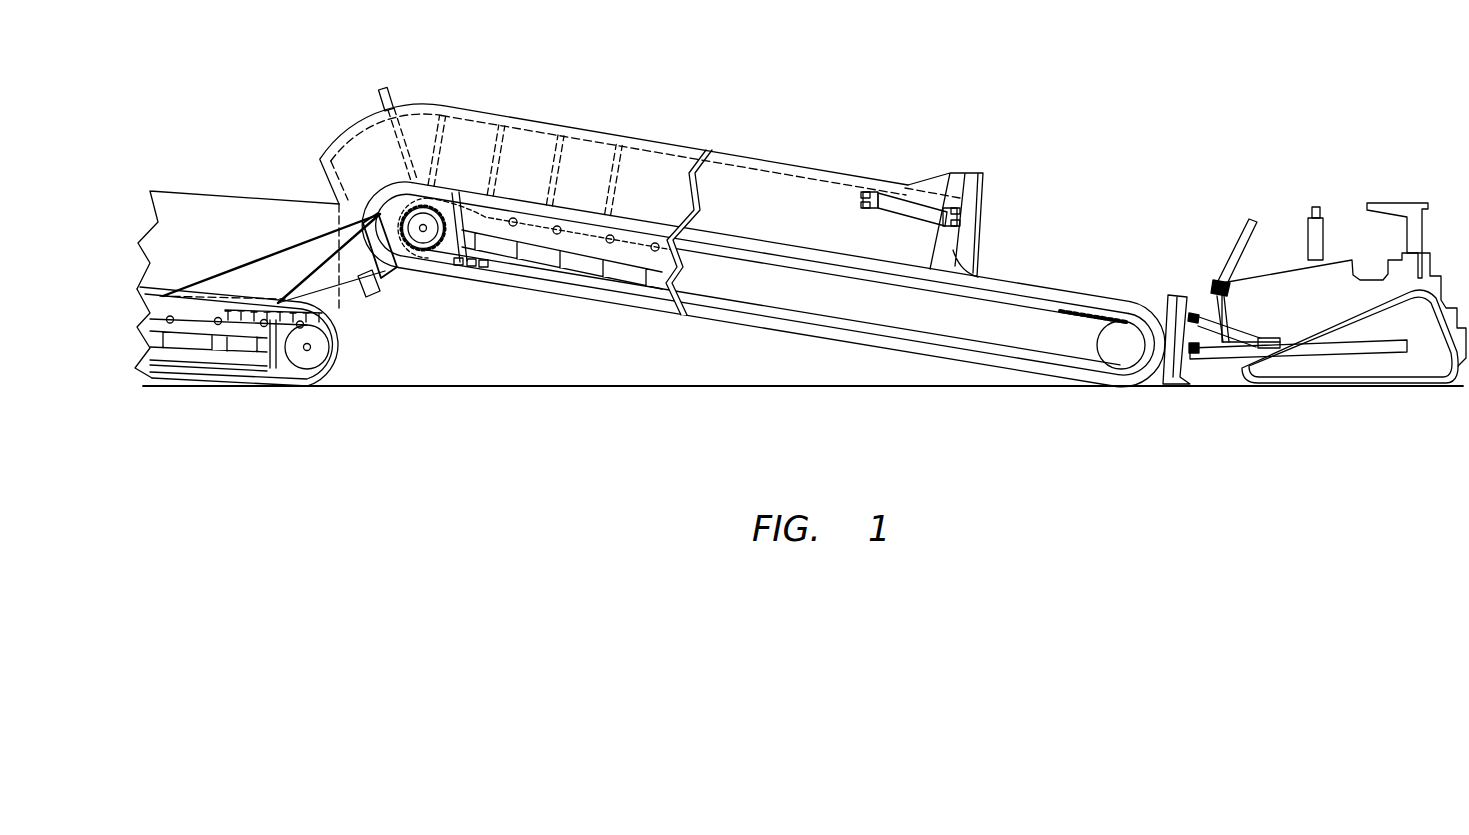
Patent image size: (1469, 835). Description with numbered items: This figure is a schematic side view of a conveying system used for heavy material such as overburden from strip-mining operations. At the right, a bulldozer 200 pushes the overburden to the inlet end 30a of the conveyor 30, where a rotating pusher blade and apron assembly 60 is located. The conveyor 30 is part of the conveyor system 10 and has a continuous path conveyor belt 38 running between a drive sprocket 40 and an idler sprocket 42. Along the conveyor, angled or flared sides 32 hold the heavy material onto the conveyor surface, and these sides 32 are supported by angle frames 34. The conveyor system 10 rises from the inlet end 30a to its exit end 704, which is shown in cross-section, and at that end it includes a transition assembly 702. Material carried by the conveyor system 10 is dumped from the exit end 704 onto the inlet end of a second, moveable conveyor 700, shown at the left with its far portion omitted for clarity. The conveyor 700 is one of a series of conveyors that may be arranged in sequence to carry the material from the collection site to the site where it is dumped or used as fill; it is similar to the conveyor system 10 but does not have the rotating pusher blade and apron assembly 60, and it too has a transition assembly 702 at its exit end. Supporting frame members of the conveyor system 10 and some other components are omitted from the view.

The conveyor system 10 is at (732, 93).
The conveyor 30 is at (722, 337).
The inlet end 30a is at (1143, 305).
The angled or flared sides 32 is at (206, 255).
The angle frames 34 is at (442, 124).
The continuous path conveyor belt 38 is at (472, 268).
The drive sprocket 40 is at (423, 240).
The idler sprocket 42 is at (1120, 355).
The rotating pusher blade and apron assembly 60 is at (966, 146).
The bulldozer 200 is at (1300, 313).
The conveyor 700 is at (198, 398).
The transition assembly 702 is at (295, 218).
The exit end 704 is at (363, 124).